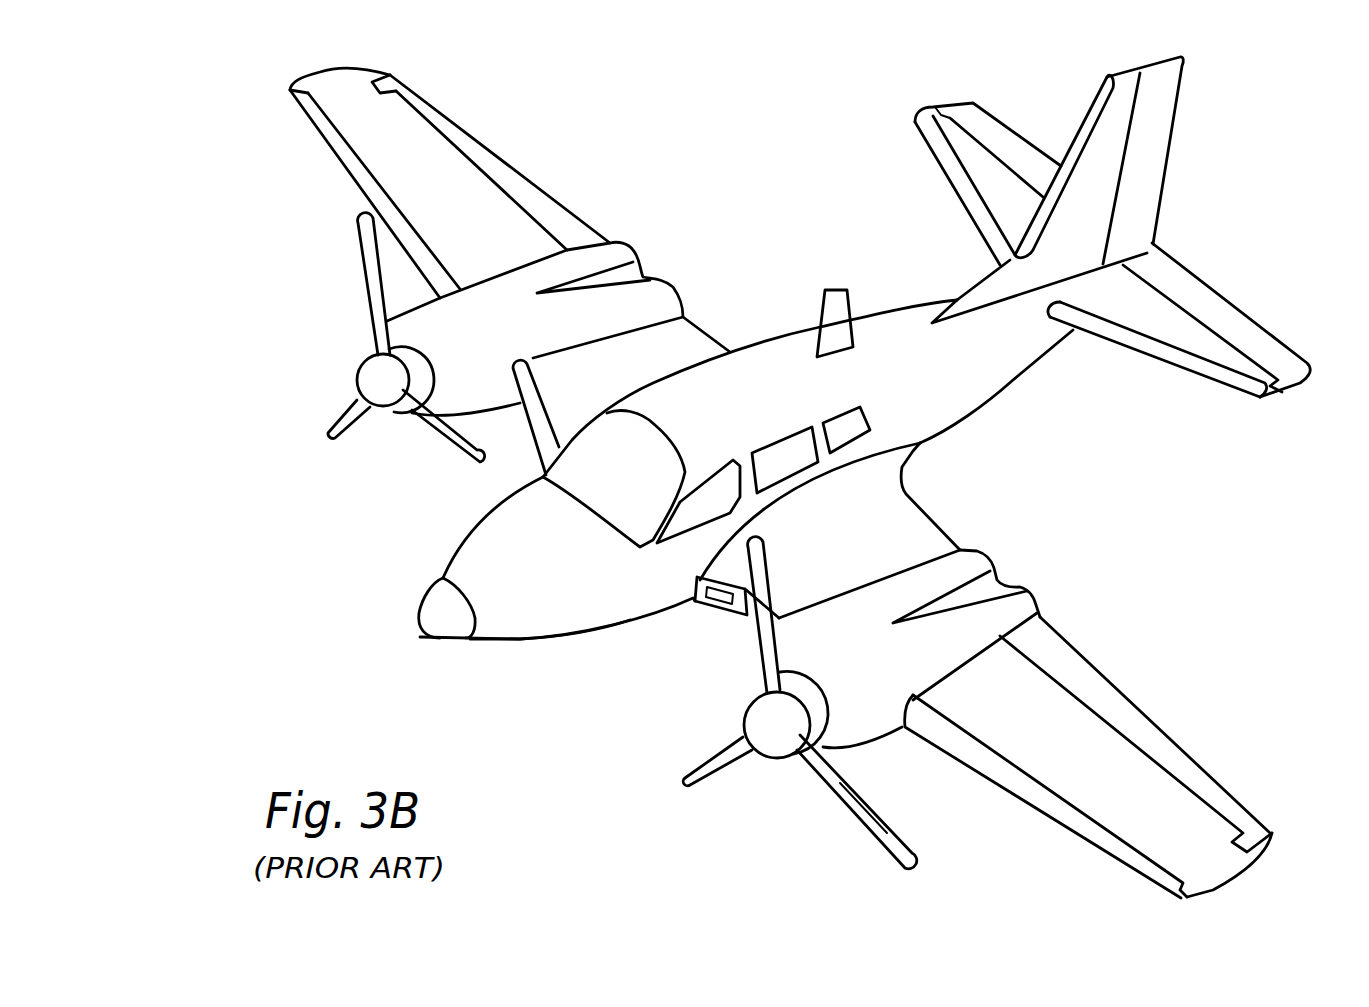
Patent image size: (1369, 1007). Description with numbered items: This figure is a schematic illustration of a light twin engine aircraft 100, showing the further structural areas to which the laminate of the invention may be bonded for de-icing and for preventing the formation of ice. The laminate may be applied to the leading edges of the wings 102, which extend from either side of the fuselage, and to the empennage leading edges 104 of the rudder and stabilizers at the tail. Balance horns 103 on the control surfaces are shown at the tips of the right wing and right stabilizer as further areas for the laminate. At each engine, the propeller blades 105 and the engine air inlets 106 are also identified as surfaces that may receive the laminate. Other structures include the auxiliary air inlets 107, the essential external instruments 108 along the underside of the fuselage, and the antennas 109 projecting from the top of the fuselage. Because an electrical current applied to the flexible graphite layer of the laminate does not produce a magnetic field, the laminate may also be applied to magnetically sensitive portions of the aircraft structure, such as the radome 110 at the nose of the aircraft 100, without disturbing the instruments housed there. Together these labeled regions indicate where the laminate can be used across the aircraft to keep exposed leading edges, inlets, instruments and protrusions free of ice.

The twin engine aircraft 100 is at (378, 502).
The leading edges of the wings 102 is at (330, 140).
The balance horns 103 is at (1300, 373).
The empennage leading edges 104 is at (957, 200).
The propeller blades 105 is at (370, 316).
The engine air inlets 106 is at (770, 730).
The auxiliary air inlets 107 is at (712, 613).
The essential external instruments 108 is at (525, 643).
The antennas 109 is at (833, 308).
The radome 110 is at (443, 627).